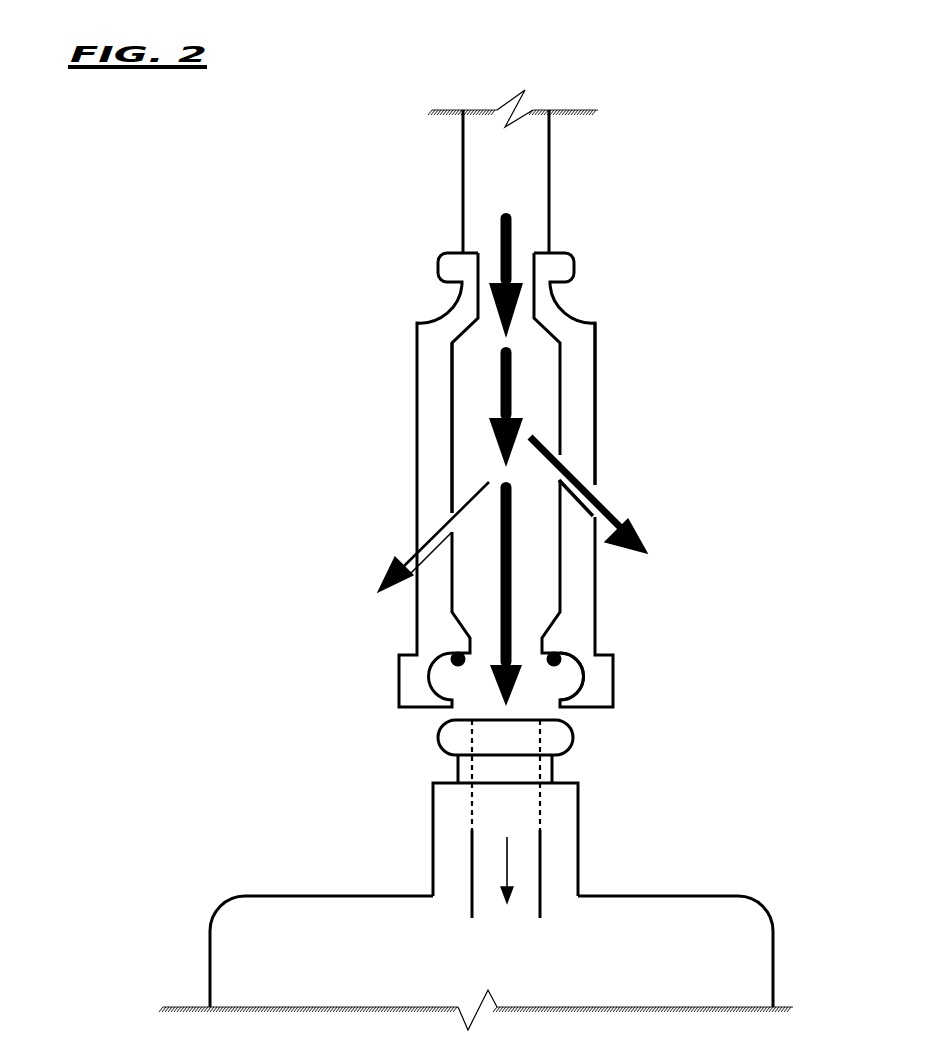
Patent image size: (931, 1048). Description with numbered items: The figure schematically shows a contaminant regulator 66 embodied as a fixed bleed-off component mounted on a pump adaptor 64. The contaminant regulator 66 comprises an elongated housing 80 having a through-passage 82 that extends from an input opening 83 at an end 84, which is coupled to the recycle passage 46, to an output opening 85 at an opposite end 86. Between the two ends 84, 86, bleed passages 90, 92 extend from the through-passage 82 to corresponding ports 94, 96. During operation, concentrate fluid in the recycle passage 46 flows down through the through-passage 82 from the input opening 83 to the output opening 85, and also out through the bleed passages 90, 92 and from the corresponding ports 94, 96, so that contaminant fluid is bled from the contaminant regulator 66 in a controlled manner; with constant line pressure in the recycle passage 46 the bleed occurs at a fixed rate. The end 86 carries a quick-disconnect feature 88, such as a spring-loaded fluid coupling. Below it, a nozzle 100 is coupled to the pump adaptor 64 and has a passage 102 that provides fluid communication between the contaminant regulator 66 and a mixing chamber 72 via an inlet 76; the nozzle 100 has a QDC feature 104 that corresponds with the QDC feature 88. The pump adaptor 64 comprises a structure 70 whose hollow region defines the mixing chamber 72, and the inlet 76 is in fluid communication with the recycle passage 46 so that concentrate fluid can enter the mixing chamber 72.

The recycle passage 46 is at (548, 147).
The input opening 83 is at (483, 258).
The end 84 is at (551, 256).
The contaminant regulator 66 is at (417, 323).
The through-passage 82 is at (453, 355).
The elongated housing 80 is at (597, 352).
The bleed passage 90 is at (451, 514).
The bleed passage 92 is at (561, 458).
The port 94 is at (417, 548).
The port 96 is at (597, 488).
The output opening 85 is at (455, 703).
The end 86 is at (590, 708).
The quick-disconnect feature 88 is at (576, 677).
The QDC feature 104 is at (572, 748).
The nozzle 100 is at (433, 780).
The passage 102 is at (472, 796).
The inlet 76 is at (542, 863).
The structure 70 is at (743, 897).
The pump adaptor 64 is at (266, 896).
The mixing chamber 72 is at (378, 984).